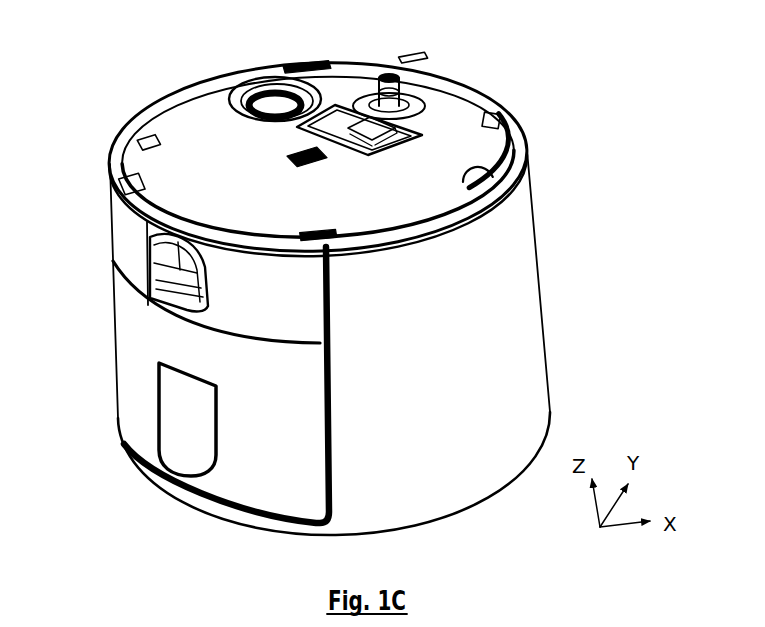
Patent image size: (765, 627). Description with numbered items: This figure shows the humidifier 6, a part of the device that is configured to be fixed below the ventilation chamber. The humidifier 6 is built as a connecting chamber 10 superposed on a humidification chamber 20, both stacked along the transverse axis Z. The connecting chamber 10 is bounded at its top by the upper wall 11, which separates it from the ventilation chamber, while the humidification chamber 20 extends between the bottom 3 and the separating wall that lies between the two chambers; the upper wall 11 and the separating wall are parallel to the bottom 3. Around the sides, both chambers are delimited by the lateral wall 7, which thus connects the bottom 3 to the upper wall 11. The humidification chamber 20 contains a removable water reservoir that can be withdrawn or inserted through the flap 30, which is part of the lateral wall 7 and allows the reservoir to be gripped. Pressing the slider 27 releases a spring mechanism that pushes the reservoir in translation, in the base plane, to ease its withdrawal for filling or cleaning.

The bottom 3 is at (470, 509).
The humidifier 6 is at (590, 284).
The lateral wall 7 is at (540, 353).
The connecting chamber 10 is at (508, 237).
The upper wall 11 is at (438, 105).
The humidification chamber 20 is at (508, 418).
The slider 27 is at (150, 278).
The flap 30 is at (140, 359).